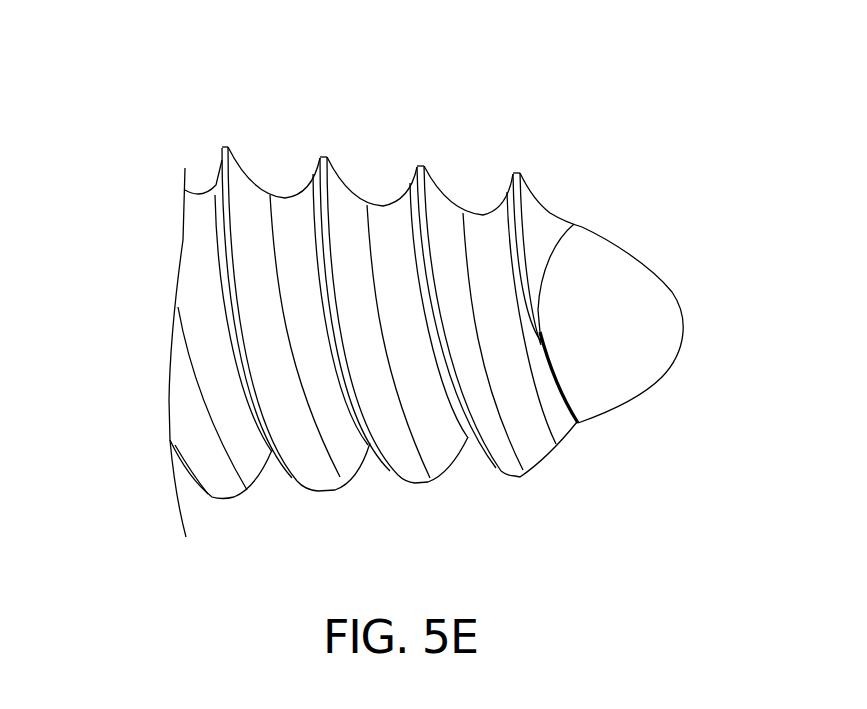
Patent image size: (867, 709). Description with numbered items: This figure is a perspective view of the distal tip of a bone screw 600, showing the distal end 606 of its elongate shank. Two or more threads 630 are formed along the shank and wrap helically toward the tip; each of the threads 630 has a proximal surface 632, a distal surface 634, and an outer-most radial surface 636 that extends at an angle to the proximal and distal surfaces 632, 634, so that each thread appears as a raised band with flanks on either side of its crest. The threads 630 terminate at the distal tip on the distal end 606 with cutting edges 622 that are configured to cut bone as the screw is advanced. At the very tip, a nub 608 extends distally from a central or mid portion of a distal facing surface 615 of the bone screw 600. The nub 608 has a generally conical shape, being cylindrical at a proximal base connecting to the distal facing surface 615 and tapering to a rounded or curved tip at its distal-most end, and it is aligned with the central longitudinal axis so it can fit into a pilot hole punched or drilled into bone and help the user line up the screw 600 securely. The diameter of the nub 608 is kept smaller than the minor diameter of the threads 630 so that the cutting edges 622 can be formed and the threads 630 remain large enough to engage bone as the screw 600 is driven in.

The bone screw 600 is at (193, 155).
The distal end 606 is at (378, 500).
The nub 608 is at (633, 283).
The distal facing surface 615 is at (555, 278).
The cutting edges 622 is at (545, 339).
The threads 630 is at (508, 138).
The proximal surface 632 is at (527, 208).
The distal surface 634 is at (550, 218).
The outer-most radial surface 636 is at (526, 195).